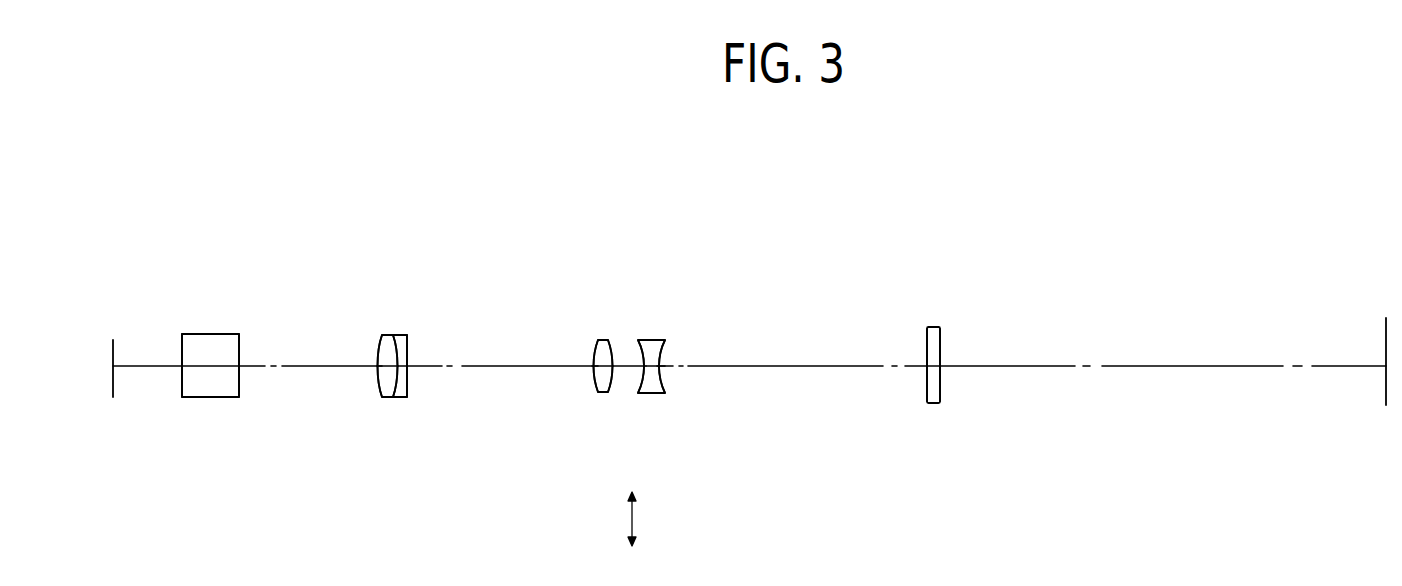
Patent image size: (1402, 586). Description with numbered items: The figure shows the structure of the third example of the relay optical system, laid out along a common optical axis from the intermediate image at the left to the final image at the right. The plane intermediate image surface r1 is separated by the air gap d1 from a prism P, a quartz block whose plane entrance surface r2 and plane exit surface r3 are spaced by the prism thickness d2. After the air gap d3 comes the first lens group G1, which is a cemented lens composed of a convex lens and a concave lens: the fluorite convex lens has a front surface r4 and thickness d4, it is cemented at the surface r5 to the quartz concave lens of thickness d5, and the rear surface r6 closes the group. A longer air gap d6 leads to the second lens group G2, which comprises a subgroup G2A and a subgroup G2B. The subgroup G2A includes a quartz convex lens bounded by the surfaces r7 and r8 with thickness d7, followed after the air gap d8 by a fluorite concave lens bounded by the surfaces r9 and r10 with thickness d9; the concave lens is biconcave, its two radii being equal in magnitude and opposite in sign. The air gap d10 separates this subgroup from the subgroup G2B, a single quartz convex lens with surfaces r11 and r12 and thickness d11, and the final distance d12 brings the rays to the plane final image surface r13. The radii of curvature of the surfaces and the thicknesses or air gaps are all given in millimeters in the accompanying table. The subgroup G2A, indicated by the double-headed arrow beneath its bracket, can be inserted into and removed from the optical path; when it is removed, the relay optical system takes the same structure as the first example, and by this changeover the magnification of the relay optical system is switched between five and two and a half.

The intermediate image surface r1 is at (113, 342).
The prism entrance surface r2 is at (182, 336).
The prism exit surface r3 is at (239, 336).
The first lens group front surface r4 is at (379, 340).
The cemented surface of first lens group r5 is at (395, 335).
The first lens group rear surface r6 is at (407, 350).
The subgroup G2A convex lens front surface r7 is at (597, 348).
The subgroup G2A convex lens rear surface r8 is at (614, 341).
The subgroup G2A concave lens front surface r9 is at (641, 346).
The subgroup G2A concave lens rear surface r10 is at (665, 347).
The subgroup G2B convex lens front surface r11 is at (927, 337).
The subgroup G2B convex lens rear surface r12 is at (940, 337).
The final image surface r13 is at (1387, 337).
The air gap between intermediate image and prism d1 is at (143, 366).
The prism thickness d2 is at (220, 366).
The air gap between prism and first lens group d3 is at (298, 366).
The fluorite convex lens thickness d4 is at (383, 377).
The quartz concave lens thickness d5 is at (407, 377).
The air gap between first lens group and subgroup G2A d6 is at (483, 366).
The subgroup G2A convex lens thickness d7 is at (600, 370).
The air gap within subgroup G2A d8 is at (627, 367).
The subgroup G2A concave lens thickness d9 is at (655, 375).
The air gap between subgroup G2A and subgroup G2B d10 is at (783, 366).
The subgroup G2B convex lens thickness d11 is at (932, 367).
The air gap to final image d12 is at (1117, 366).
The prism P is at (207, 397).
The first lens group G1 is at (392, 397).
The subgroup G2A is at (680, 438).
The subgroup G2B is at (932, 403).
The second lens group G2 is at (967, 548).